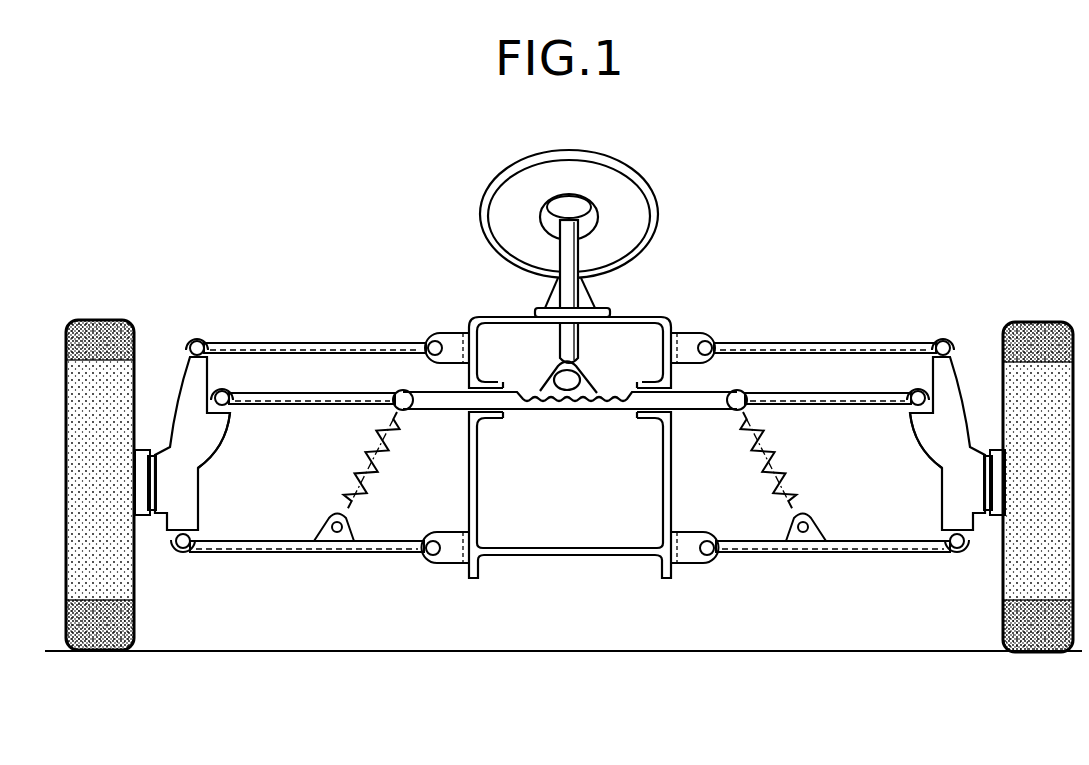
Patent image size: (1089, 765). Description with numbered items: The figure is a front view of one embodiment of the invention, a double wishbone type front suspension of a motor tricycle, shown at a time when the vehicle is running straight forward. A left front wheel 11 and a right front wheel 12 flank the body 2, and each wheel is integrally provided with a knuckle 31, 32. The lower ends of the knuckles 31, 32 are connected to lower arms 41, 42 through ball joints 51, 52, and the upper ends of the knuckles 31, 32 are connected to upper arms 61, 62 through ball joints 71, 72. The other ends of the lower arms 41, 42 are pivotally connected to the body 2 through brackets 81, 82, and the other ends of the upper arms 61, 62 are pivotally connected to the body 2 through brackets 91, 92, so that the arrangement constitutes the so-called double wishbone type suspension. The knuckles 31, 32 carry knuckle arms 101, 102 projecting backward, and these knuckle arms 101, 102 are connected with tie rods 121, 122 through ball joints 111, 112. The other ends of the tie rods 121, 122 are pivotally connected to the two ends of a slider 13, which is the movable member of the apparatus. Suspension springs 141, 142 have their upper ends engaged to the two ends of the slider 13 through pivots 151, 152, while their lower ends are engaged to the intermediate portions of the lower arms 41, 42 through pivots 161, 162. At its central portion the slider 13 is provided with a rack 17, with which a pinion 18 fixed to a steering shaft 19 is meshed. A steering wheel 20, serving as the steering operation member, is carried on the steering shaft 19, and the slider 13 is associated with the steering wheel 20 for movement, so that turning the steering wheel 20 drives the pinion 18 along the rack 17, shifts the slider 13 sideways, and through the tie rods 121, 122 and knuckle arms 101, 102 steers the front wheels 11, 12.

The left front wheel 11 is at (1038, 655).
The right front wheel 12 is at (98, 653).
The body 2 is at (490, 318).
The knuckle 31 is at (938, 458).
The knuckle 32 is at (196, 463).
The lower arm 41 is at (837, 555).
The lower arm 42 is at (286, 554).
The ball joint 51 is at (958, 555).
The ball joint 52 is at (184, 554).
The upper arm 61 is at (814, 343).
The upper arm 62 is at (333, 343).
The ball joint 71 is at (946, 342).
The ball joint 72 is at (197, 341).
The bracket 81 is at (697, 565).
The bracket 82 is at (447, 564).
The bracket 91 is at (704, 333).
The bracket 92 is at (432, 333).
The knuckle arm 101 is at (920, 430).
The knuckle arm 102 is at (215, 425).
The ball joint 111 is at (916, 391).
The ball joint 112 is at (225, 391).
The tie rod 121 is at (830, 395).
The tie rod 122 is at (328, 393).
The slider 13 is at (622, 412).
The suspension spring 141 is at (800, 470).
The suspension spring 142 is at (389, 470).
The pivot 151 is at (742, 392).
The pivot 152 is at (400, 391).
The pivot 161 is at (810, 525).
The pivot 162 is at (324, 522).
The rack 17 is at (606, 392).
The pinion 18 is at (543, 387).
The steering shaft 19 is at (580, 289).
The steering wheel 20 is at (657, 200).